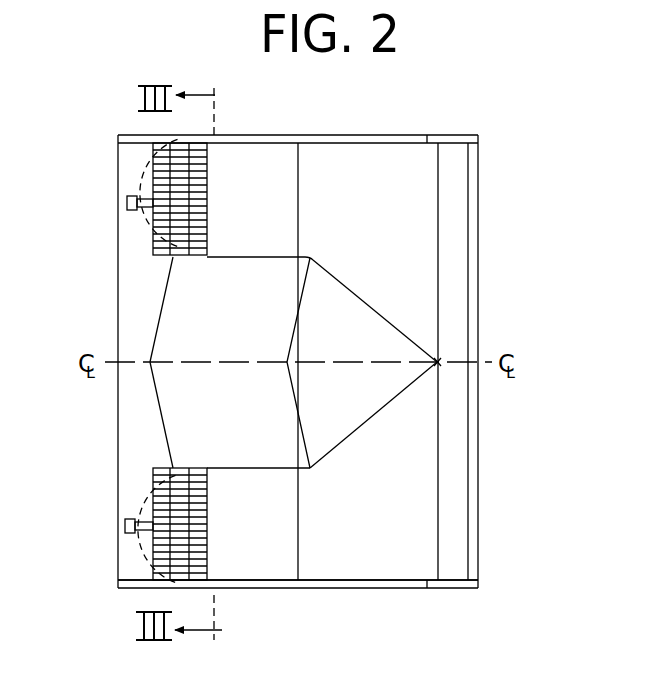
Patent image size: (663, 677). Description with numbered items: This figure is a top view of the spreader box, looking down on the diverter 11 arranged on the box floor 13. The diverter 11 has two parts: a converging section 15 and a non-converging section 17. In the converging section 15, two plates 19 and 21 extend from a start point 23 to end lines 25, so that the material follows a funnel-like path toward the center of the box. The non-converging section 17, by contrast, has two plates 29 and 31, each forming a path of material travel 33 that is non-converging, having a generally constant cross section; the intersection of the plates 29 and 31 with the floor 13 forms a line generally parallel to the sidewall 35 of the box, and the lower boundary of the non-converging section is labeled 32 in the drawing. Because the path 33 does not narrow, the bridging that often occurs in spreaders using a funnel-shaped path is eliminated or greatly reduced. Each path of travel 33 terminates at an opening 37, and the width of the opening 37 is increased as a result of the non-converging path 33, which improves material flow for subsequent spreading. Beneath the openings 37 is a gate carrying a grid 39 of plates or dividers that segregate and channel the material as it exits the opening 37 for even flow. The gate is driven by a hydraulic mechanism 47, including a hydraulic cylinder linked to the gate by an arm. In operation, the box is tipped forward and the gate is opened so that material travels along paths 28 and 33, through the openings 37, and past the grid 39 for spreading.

The diverter 11 is at (140, 312).
The box floor 13 is at (388, 504).
The converging section 15 is at (392, 293).
The non-converging section 17 is at (233, 250).
The upper flow channel 19 is at (358, 338).
The lower flow channel 21 is at (358, 408).
The start point 23 is at (438, 362).
The end lines 25 is at (303, 285).
The path 28 is at (417, 182).
The plate 29 is at (237, 418).
The plate 31 is at (237, 330).
The lower compartment wall 32 is at (253, 473).
The path of material travel 33 is at (277, 180).
The sidewall 35 is at (360, 578).
The opening 37 is at (203, 153).
The grid 39 is at (158, 231).
The hydraulic mechanism 47 is at (127, 526).